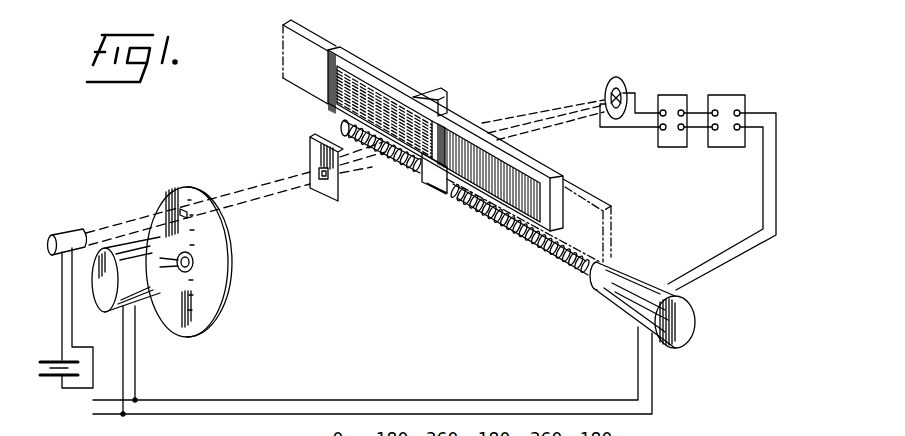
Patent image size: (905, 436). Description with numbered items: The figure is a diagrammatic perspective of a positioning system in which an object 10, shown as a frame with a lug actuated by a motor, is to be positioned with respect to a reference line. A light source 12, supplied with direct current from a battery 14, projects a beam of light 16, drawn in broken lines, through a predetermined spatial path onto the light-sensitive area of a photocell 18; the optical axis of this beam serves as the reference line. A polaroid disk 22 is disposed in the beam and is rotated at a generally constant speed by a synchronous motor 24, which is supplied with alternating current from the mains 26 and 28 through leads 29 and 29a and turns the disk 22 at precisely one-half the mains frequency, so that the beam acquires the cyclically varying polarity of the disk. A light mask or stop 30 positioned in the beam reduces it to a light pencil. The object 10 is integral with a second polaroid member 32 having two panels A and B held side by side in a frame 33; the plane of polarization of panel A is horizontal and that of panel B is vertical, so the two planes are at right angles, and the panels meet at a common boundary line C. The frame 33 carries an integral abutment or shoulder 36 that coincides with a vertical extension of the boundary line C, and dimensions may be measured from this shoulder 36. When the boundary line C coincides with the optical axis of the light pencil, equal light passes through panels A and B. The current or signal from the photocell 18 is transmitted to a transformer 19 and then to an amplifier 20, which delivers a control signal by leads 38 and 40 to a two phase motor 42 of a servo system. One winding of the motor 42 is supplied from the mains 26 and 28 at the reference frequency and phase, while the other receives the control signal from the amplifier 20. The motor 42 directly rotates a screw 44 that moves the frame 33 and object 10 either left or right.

The object 10 is at (433, 196).
The light source 12 is at (65, 228).
The battery 14 is at (53, 378).
The beam of light 16 is at (110, 222).
The light-sensitive element 18 is at (616, 78).
The transformer 19 is at (672, 95).
The amplifier 20 is at (720, 95).
The polaroid disk 22 is at (189, 262).
The motor 24 is at (111, 298).
The mains 26 is at (241, 399).
The mains 28 is at (242, 416).
The lead 29 is at (123, 340).
The lead 29a is at (137, 366).
The light mask or stop 30 is at (310, 147).
The second polaroid member 32 is at (350, 113).
The frame 33 is at (395, 88).
The abutment or shoulder 36 is at (445, 100).
The lead 38 is at (745, 243).
The lead 40 is at (741, 257).
The two phase motor 42 is at (642, 280).
The screw 44 is at (500, 223).
The panel A is at (355, 80).
The panel B is at (507, 168).
The boundary line C is at (443, 128).